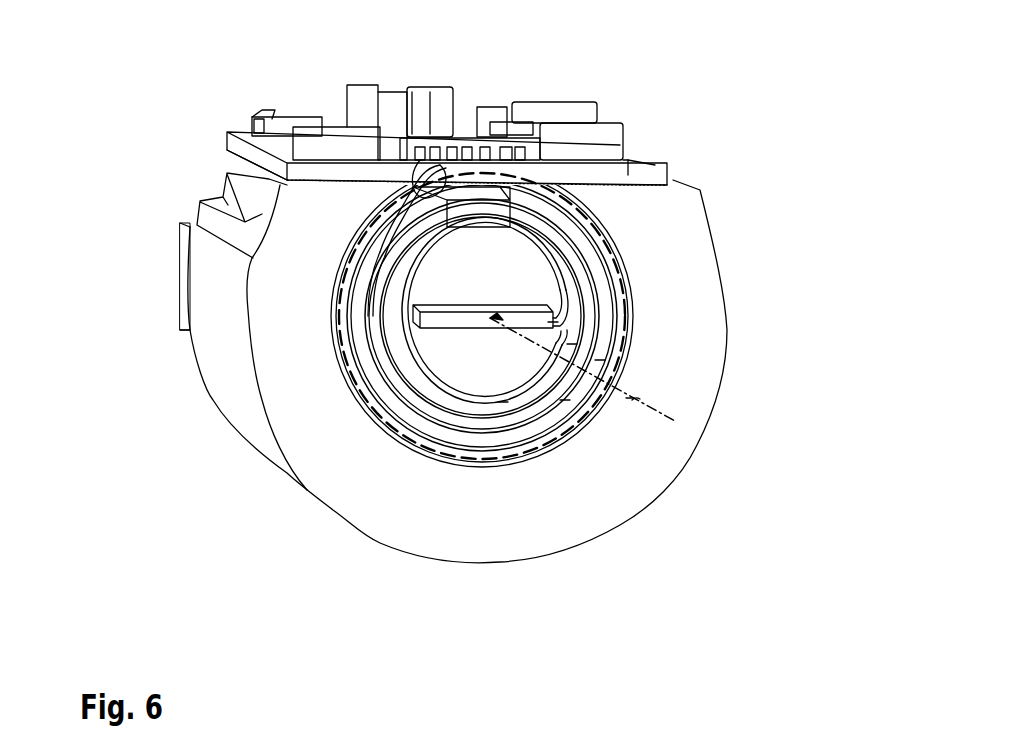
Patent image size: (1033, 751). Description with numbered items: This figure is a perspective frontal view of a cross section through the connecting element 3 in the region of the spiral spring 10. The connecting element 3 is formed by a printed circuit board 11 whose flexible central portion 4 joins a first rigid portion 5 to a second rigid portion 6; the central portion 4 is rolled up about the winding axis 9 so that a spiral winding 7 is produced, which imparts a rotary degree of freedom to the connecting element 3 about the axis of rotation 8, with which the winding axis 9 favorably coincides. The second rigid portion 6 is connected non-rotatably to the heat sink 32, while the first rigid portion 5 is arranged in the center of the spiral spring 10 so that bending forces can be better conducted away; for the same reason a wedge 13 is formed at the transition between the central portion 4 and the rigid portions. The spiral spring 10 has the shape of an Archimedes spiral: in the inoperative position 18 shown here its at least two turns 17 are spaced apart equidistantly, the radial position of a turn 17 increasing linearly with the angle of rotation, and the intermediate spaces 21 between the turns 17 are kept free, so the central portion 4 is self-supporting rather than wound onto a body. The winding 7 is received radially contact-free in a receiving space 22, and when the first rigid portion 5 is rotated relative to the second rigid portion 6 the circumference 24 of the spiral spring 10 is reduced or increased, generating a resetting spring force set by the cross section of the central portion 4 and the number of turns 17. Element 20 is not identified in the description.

The connecting element 3 is at (628, 160).
The flexible central portion 4 is at (365, 254).
The first rigid portion 5 is at (440, 323).
The second rigid portion 6 is at (227, 143).
The spiral winding 7 is at (402, 438).
The axis of rotation 8 is at (631, 400).
The winding axis 9 is at (636, 400).
The spiral spring 10 is at (503, 402).
The printed circuit board 11 is at (255, 158).
The wedge 13 is at (553, 318).
The turns 17 is at (572, 344).
The inoperative position 18 is at (347, 310).
The wire 20 is at (560, 263).
The intermediate spaces 21 is at (384, 383).
The receiving space 22 is at (392, 359).
The circumference 24 is at (560, 300).
The heat sink 32 is at (690, 383).